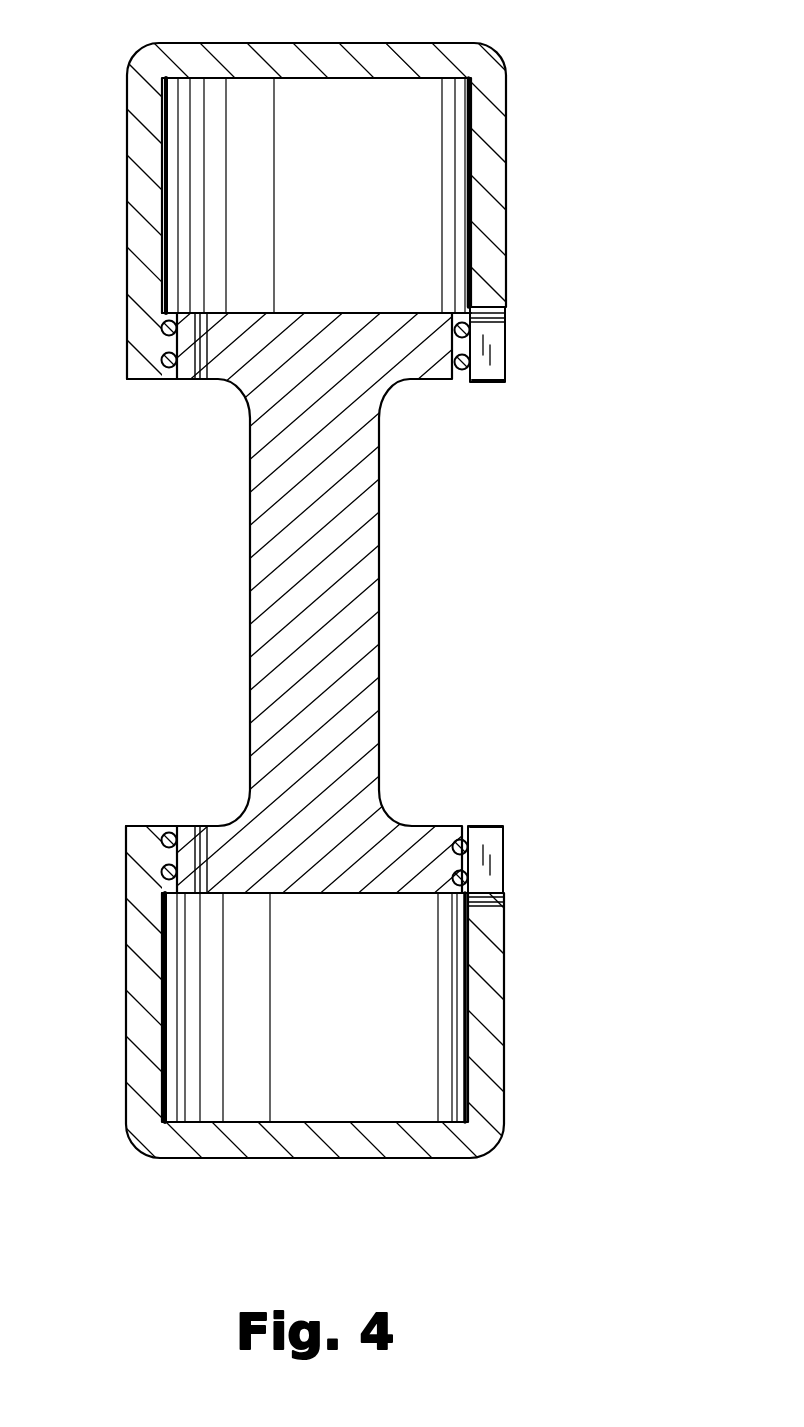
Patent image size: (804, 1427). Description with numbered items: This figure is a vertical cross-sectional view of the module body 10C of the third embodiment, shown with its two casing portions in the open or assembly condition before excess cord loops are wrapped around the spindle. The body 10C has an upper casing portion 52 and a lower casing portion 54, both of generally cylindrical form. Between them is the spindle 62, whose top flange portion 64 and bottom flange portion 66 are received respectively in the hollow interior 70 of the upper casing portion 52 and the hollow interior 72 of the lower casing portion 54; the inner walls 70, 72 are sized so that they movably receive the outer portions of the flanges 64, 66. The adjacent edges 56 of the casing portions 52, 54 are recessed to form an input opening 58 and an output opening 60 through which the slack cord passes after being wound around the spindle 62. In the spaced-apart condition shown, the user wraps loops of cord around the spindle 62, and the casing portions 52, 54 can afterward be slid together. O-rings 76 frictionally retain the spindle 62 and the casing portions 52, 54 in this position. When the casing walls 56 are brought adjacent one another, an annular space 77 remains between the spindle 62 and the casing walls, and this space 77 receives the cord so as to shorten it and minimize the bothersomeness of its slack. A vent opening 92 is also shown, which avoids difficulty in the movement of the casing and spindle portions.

The body 10C is at (622, 48).
The upper casing portion 52 is at (506, 208).
The lower casing portion 54 is at (503, 980).
The adjacent edges 56 is at (486, 382).
The input opening 58 is at (505, 342).
The output opening 60 is at (497, 865).
The spindle 62 is at (365, 538).
The top flange portion 64 is at (393, 374).
The bottom flange portion 66 is at (437, 840).
The hollow interior 70 is at (472, 262).
The hollow interior 72 is at (468, 1065).
The O-rings 76 is at (162, 360).
The annular space 77 is at (452, 636).
The vent opening 92 is at (200, 379).